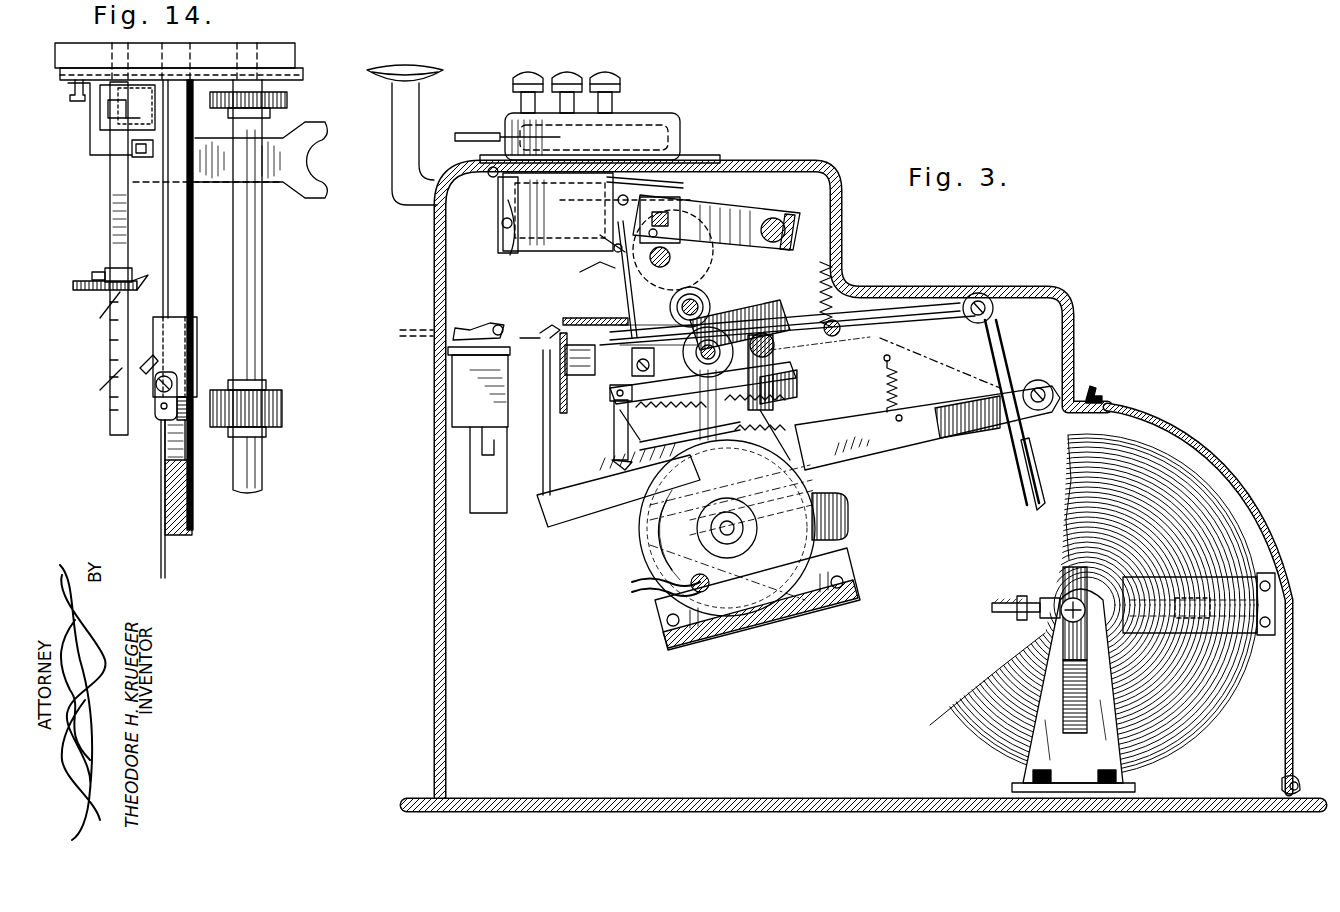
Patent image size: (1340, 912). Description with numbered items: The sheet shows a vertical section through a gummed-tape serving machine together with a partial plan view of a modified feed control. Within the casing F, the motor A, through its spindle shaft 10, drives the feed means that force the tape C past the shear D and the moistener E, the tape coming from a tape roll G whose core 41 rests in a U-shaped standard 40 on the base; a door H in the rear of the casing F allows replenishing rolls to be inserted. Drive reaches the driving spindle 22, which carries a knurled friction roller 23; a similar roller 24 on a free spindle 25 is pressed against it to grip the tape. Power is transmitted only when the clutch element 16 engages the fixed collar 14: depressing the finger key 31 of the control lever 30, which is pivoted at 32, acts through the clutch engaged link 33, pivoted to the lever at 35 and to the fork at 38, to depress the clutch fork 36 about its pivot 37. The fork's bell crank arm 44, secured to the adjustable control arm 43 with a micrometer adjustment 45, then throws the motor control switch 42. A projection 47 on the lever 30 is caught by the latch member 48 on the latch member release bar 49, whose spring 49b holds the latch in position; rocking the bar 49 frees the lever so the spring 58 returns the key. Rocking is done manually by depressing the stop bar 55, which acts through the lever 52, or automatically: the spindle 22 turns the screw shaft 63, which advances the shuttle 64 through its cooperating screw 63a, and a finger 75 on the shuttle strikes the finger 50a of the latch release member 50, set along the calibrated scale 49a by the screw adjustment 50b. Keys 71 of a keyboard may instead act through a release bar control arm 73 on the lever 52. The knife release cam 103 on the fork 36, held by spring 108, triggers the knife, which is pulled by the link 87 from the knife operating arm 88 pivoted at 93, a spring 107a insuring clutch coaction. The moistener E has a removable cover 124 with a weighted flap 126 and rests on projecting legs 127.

In FIG. 14, the control lever 30 is at (303, 80).
In FIG. 3, the control lever 30 is at (421, 127).
In FIG. 14, the spring 49b is at (72, 100).
In FIG. 3, the spring 49b is at (580, 273).
In FIG. 14, the latch member release bar 49 is at (116, 422).
In FIG. 3, the latch member release bar 49 is at (598, 242).
In FIG. 14, the latch member 48 is at (112, 112).
In FIG. 14, the projection 47 is at (140, 118).
In FIG. 14, the driving spindle 22 is at (262, 337).
In FIG. 14, the knurled friction roller 23 is at (283, 407).
In FIG. 14, the shuttle 64 is at (192, 324).
In FIG. 3, the shuttle 64 is at (680, 215).
In FIG. 14, the screw shaft 63 is at (193, 508).
In FIG. 3, the screw shaft 63 is at (672, 258).
In FIG. 14, the latch release member 50 is at (118, 268).
In FIG. 14, the screw adjustment 50b is at (95, 278).
In FIG. 14, the finger 50a is at (104, 314).
In FIG. 14, the finger 75 is at (140, 366).
In FIG. 14, the calibrated scale 49a is at (103, 384).
In FIG. 3, the finger key 31 is at (425, 72).
In FIG. 3, the keys 71 is at (612, 112).
In FIG. 3, the stop bar 55 is at (468, 132).
In FIG. 3, the release bar control arm 73 is at (503, 238).
In FIG. 3, the lever 52 is at (505, 212).
In FIG. 3, the pivot 32 is at (775, 218).
In FIG. 3, the pivot point 35 is at (684, 185).
In FIG. 3, the cooperating screw 63a is at (692, 290).
In FIG. 3, the clutch engaged link 33 is at (628, 300).
In FIG. 3, the spring 58 is at (838, 290).
In FIG. 3, the clutch element 16 is at (760, 318).
In FIG. 3, the clutch fork 36 is at (898, 330).
In FIG. 3, the pivot point 37 is at (982, 294).
In FIG. 3, the pivot point 93 is at (1037, 380).
In FIG. 3, the fixed collar 14 is at (797, 397).
In FIG. 3, the spring 107a is at (899, 400).
In FIG. 3, the free spindle 25 is at (696, 352).
In FIG. 3, the pivot point 38 is at (636, 362).
In FIG. 3, the knurled friction roller 24 is at (715, 378).
In FIG. 3, the knife release cam 103 is at (700, 415).
In FIG. 3, the spring 108 is at (614, 408).
In FIG. 3, the pivoted and weighted flap 126 is at (470, 325).
In FIG. 3, the removable cover 124 is at (455, 356).
In FIG. 3, the projecting legs 127 is at (490, 442).
In FIG. 3, the link 87 is at (553, 462).
In FIG. 3, the knife operating arm 88 is at (590, 505).
In FIG. 3, the spindle shaft 10 is at (727, 522).
In FIG. 3, the bell crank arm 44 is at (1017, 453).
In FIG. 3, the micrometer adjustment 45 is at (1030, 505).
In FIG. 3, the U-shaped standard 40 is at (1073, 679).
In FIG. 3, the core 41 is at (1058, 615).
In FIG. 3, the adjustable control arm 43 is at (1010, 598).
In FIG. 3, the motor control switch 42 is at (1275, 578).
In FIG. 3, the motor A is at (660, 558).
In FIG. 3, the tape C is at (415, 346).
In FIG. 3, the shear D is at (560, 400).
In FIG. 3, the moistener E is at (498, 381).
In FIG. 3, the casing F is at (844, 232).
In FIG. 3, the tape roll G is at (1185, 485).
In FIG. 3, the door H is at (1260, 455).